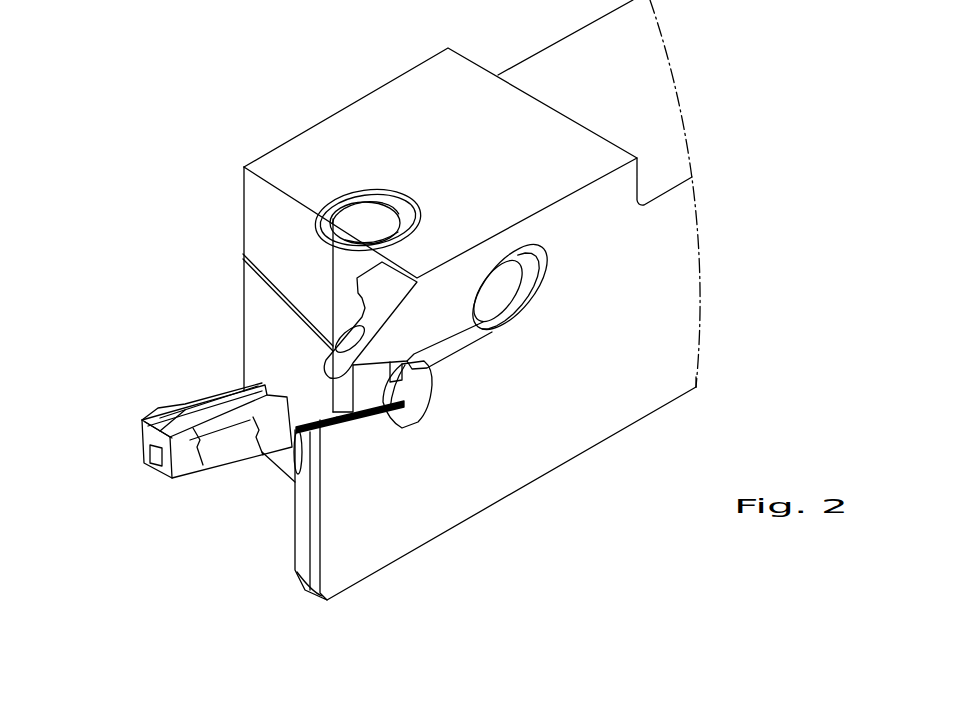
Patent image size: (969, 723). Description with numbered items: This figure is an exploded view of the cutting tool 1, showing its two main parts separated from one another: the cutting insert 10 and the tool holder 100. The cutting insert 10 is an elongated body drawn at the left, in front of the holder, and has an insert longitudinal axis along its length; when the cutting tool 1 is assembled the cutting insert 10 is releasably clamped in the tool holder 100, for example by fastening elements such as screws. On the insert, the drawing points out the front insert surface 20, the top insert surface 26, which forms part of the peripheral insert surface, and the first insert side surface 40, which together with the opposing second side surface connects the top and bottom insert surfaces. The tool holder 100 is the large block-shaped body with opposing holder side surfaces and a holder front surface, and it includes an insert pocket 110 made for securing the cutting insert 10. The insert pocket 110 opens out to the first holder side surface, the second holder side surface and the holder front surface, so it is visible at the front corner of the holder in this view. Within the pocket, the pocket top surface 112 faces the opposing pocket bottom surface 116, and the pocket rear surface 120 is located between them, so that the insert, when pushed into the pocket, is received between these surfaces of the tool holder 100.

The cutting tool 1 is at (178, 123).
The cutting insert 10 is at (122, 404).
The front insert surface 20 is at (128, 458).
The top insert surface 26 is at (187, 384).
The first insert side surface 40 is at (237, 448).
The tool holder 100 is at (751, 253).
The insert pocket 110 is at (271, 380).
The pocket top surface 112 is at (338, 383).
The pocket bottom surface 116 is at (333, 418).
The pocket rear surface 120 is at (410, 418).